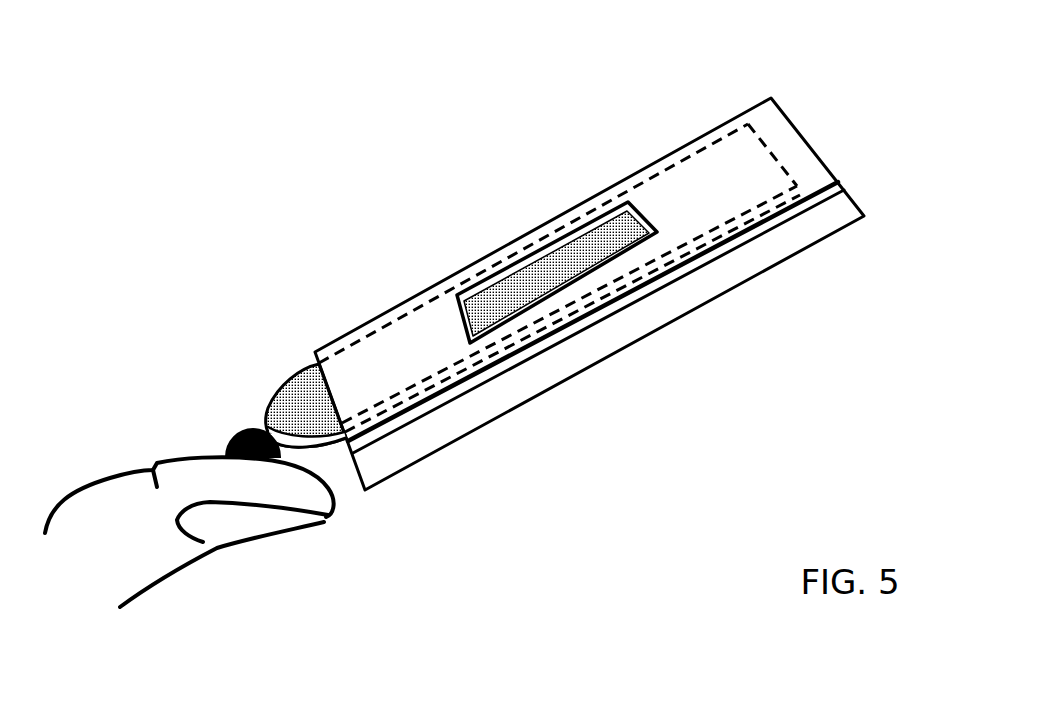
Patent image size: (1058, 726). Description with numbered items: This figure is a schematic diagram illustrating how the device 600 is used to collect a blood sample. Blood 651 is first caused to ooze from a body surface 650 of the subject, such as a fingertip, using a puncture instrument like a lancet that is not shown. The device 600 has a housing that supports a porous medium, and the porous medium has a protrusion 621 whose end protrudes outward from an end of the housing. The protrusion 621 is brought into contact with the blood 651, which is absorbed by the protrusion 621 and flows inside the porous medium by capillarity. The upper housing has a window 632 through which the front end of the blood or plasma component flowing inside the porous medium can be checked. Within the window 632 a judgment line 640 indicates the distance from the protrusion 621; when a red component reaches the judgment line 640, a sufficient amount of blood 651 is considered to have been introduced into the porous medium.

The device 600 is at (810, 78).
The window 632 is at (592, 177).
The judgment line 640 is at (556, 273).
The protrusion 621 is at (272, 400).
The body surface 650 is at (158, 470).
The blood 651 is at (238, 427).